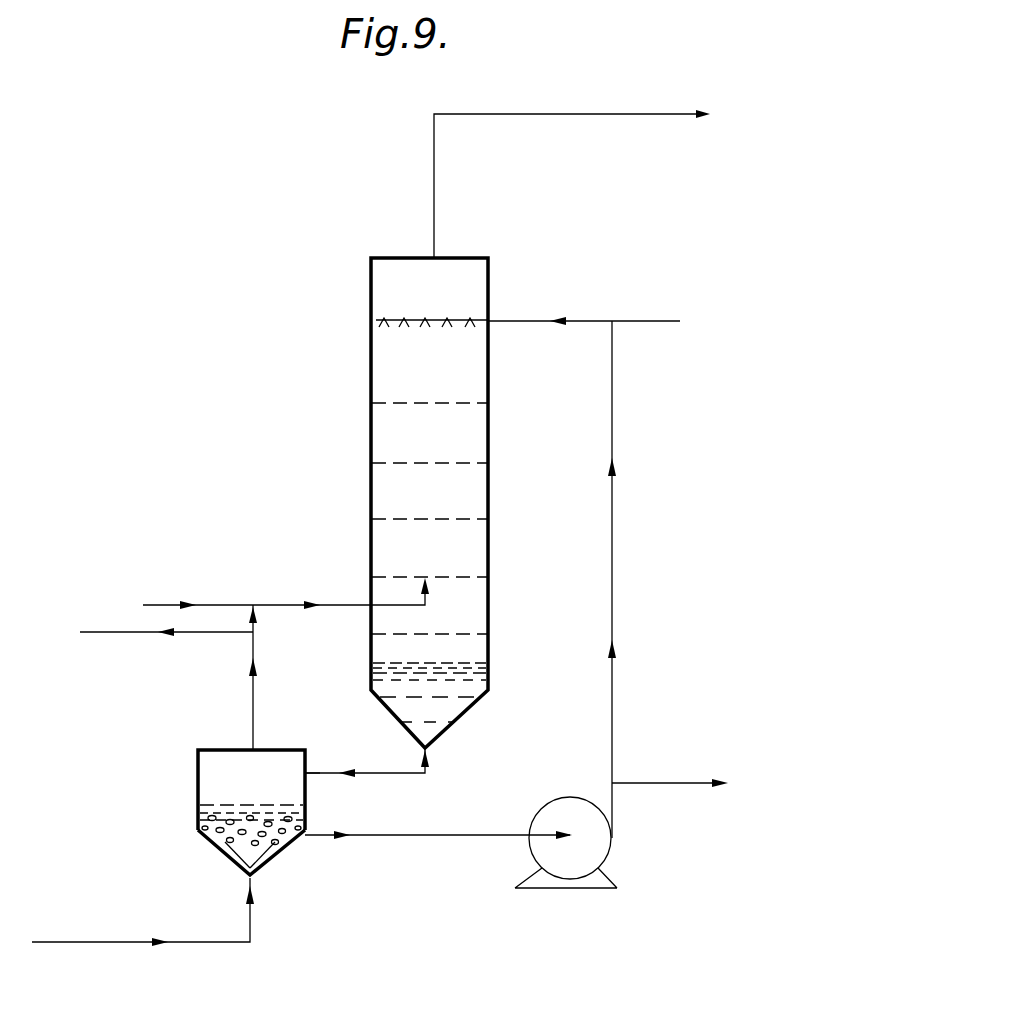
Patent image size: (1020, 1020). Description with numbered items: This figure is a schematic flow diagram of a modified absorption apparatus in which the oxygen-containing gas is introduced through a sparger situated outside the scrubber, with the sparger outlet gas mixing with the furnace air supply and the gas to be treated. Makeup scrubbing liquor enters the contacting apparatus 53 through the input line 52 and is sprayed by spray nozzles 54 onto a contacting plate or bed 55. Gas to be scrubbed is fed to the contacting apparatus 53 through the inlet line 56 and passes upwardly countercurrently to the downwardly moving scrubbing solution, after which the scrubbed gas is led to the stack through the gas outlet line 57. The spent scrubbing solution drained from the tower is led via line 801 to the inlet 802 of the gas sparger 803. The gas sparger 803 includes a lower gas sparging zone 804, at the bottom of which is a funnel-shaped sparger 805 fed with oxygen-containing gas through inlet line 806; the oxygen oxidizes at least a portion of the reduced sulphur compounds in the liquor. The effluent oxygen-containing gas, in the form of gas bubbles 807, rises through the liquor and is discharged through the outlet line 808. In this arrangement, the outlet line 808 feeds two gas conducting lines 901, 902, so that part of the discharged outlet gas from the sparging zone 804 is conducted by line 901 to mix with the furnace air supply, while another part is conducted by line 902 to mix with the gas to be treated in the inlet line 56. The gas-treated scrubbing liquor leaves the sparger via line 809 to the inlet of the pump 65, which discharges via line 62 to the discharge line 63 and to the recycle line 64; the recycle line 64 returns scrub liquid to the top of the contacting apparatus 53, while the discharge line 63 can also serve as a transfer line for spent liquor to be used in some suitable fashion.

The input line 52 is at (497, 319).
The contacting apparatus 53 is at (461, 437).
The spray nozzles 54 is at (415, 318).
The contacting plate or bed 55 is at (447, 403).
The inlet line 56 is at (362, 608).
The gas outlet line 57 is at (434, 210).
The line 62 is at (612, 831).
The discharge line 63 is at (690, 789).
The recycle line 64 is at (613, 447).
The pump 65 is at (600, 848).
The line 801 is at (405, 779).
The inlet 802 is at (306, 772).
The gas sparger 803 is at (225, 778).
The gas sparging zone 804 is at (290, 843).
The funnel-shaped sparger 805 is at (241, 870).
The inlet line 806 is at (256, 913).
The gas bubbles 807 is at (222, 842).
The outlet line 808 is at (253, 703).
The line 809 is at (478, 833).
The gas conducting line 901 is at (121, 612).
The gas conducting line 902 is at (254, 632).